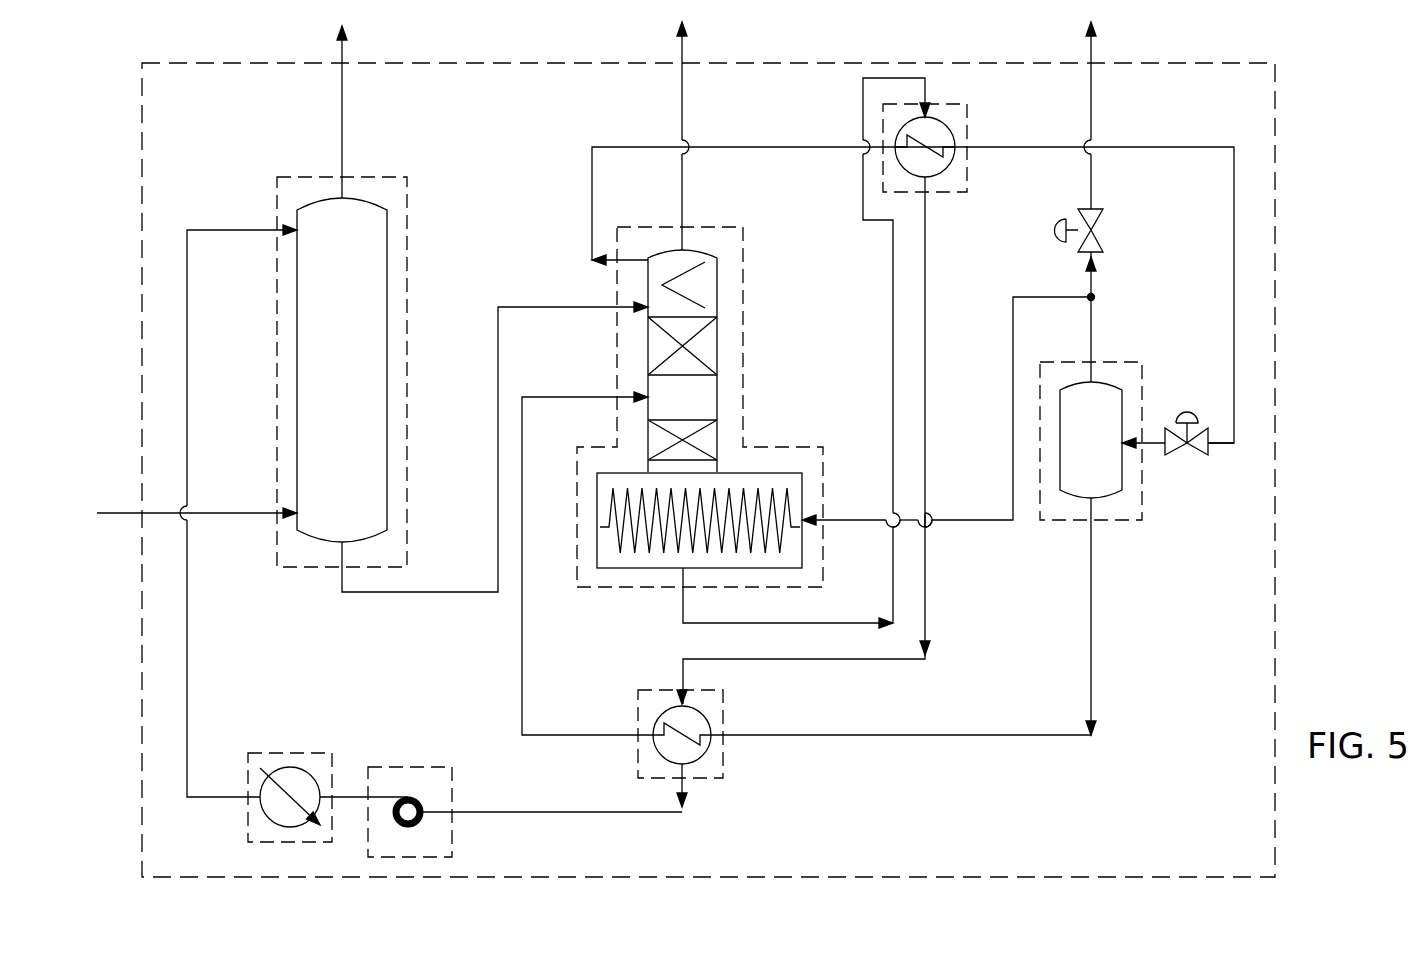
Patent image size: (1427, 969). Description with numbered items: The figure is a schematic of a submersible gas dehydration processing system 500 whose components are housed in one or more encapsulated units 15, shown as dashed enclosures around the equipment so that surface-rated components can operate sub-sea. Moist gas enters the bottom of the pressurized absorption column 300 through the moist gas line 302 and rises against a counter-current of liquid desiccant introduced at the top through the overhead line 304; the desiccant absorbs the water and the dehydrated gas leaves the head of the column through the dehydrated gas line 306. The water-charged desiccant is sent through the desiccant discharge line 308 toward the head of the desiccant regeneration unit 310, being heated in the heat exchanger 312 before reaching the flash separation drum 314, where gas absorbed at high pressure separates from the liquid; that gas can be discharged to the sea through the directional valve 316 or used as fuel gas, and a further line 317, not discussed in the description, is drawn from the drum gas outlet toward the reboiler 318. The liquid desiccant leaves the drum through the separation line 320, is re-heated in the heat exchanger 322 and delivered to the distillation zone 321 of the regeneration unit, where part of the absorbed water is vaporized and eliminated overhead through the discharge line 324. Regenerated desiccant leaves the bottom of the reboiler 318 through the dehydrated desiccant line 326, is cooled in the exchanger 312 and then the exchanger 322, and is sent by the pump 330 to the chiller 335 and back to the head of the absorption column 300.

The encapsulated unit 15 is at (407, 212).
The absorption column 300 is at (320, 380).
The moist gas line 302 is at (233, 510).
The overhead line 304 is at (187, 276).
The dehydrated gas line 306 is at (342, 99).
The desiccant discharge line 308 is at (450, 590).
The desiccant regeneration unit 310 is at (782, 269).
The heat exchanger 312 is at (957, 122).
The flash separation drum 314 is at (1070, 452).
The directional valve 316 is at (1103, 222).
The reflux stream 317 is at (1013, 370).
The reboiler 318 is at (802, 481).
The separation line 320 is at (545, 397).
The distillation zone 321 is at (700, 412).
The heat exchanger 322 is at (700, 710).
The discharge line 324 is at (682, 195).
The dehydrated desiccant line 326 is at (893, 330).
The pump 330 is at (413, 797).
The chiller 335 is at (285, 767).
The dehydration processing system 500 is at (1332, 160).